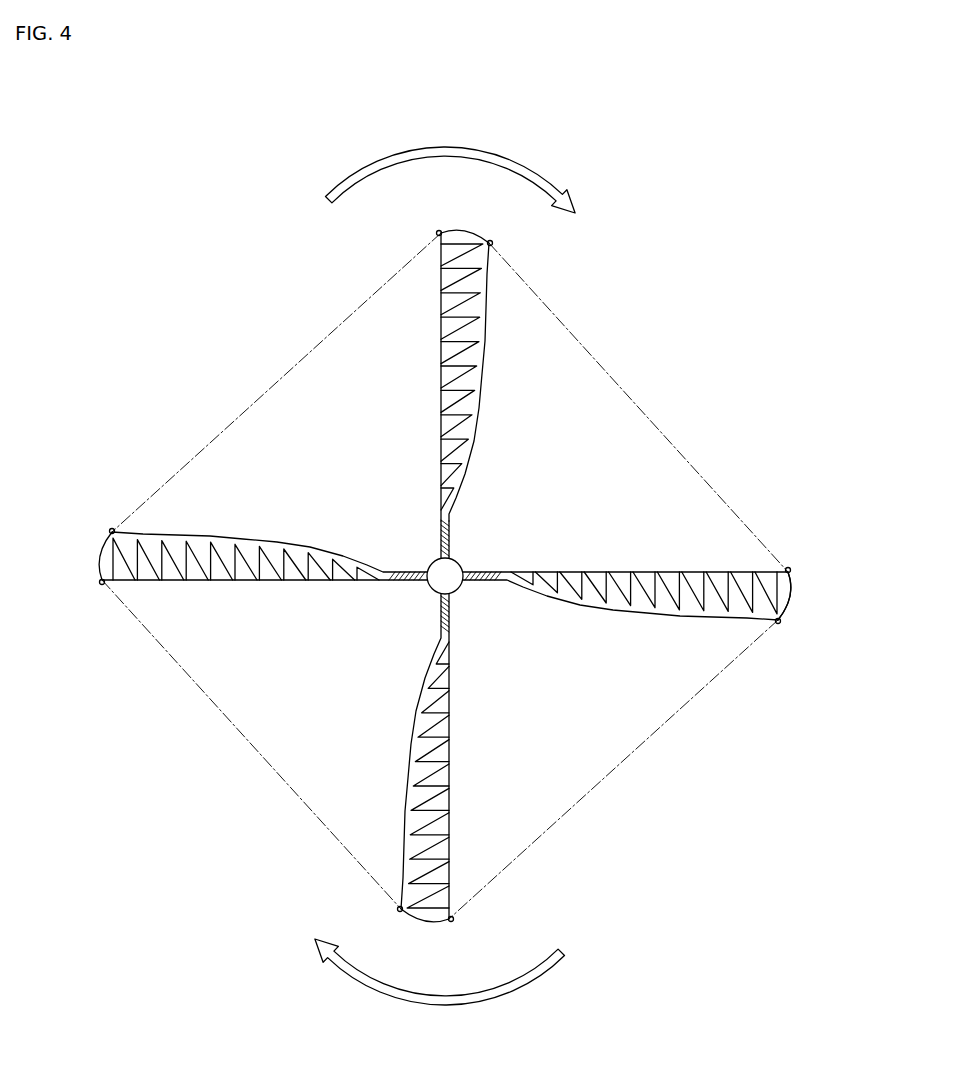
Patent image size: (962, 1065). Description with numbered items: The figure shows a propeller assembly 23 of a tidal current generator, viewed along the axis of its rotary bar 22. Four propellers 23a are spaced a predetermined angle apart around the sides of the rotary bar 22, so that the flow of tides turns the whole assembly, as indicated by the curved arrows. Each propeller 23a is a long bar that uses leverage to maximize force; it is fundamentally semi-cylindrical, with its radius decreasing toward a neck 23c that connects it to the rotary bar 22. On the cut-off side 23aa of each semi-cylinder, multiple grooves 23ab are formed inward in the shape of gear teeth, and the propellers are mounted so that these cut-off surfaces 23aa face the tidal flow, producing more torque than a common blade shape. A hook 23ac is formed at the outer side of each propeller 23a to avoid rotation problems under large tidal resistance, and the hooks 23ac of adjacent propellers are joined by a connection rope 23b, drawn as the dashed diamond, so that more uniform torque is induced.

The rotary bar 22 is at (427, 583).
The propeller assembly 23 is at (491, 554).
The propeller 23a is at (401, 394).
The cut-off side 23aa is at (428, 333).
The groove 23ab is at (440, 378).
The hook 23ac is at (783, 618).
The connection rope 23b is at (641, 406).
The neck 23c is at (438, 532).